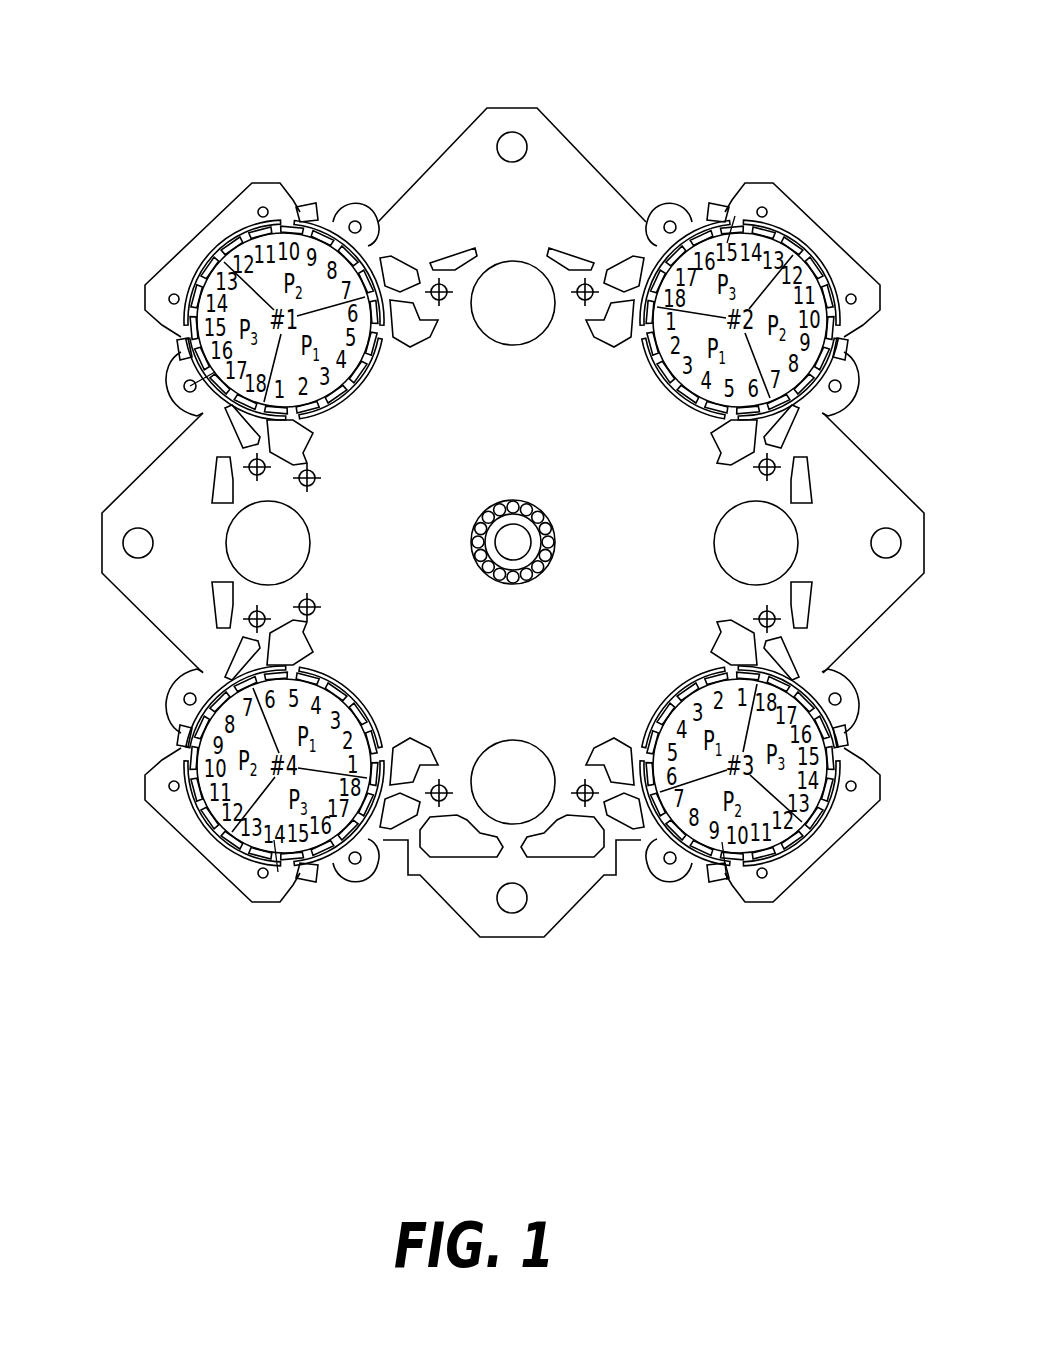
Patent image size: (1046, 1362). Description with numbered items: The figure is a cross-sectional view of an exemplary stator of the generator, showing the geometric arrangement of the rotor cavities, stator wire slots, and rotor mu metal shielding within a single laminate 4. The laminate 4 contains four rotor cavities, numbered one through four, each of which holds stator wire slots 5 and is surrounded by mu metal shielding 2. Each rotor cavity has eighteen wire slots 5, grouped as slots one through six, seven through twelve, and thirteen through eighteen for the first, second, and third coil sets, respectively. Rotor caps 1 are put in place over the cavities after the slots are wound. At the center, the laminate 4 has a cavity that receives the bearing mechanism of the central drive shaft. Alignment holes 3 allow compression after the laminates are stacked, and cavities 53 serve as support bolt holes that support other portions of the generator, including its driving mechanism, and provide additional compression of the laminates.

The rotor cap 1 is at (198, 238).
The mu metal shielding 2 is at (258, 186).
The alignment hole 3 is at (310, 556).
The laminate 4 is at (472, 124).
The stator wire slot 5 is at (190, 386).
The cavity 53 is at (504, 133).